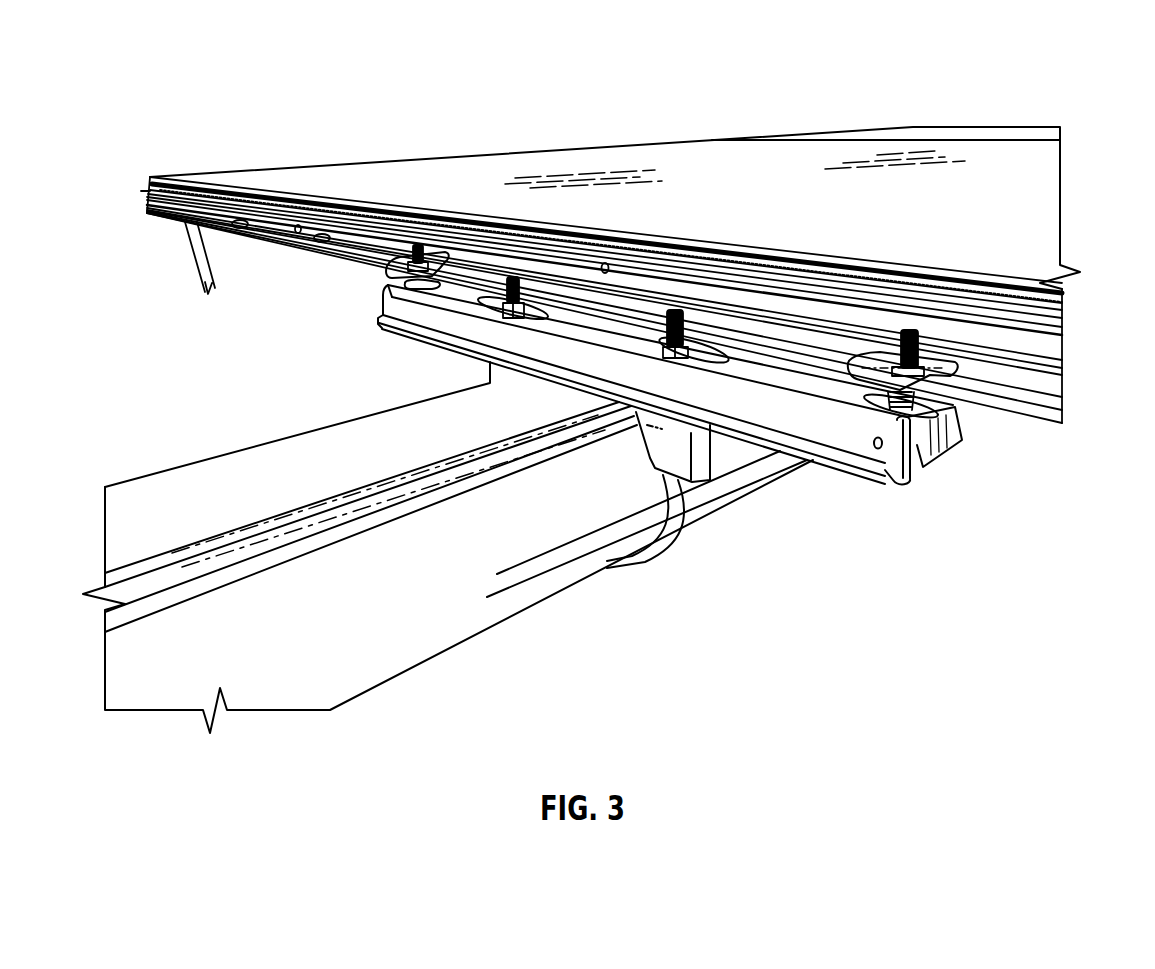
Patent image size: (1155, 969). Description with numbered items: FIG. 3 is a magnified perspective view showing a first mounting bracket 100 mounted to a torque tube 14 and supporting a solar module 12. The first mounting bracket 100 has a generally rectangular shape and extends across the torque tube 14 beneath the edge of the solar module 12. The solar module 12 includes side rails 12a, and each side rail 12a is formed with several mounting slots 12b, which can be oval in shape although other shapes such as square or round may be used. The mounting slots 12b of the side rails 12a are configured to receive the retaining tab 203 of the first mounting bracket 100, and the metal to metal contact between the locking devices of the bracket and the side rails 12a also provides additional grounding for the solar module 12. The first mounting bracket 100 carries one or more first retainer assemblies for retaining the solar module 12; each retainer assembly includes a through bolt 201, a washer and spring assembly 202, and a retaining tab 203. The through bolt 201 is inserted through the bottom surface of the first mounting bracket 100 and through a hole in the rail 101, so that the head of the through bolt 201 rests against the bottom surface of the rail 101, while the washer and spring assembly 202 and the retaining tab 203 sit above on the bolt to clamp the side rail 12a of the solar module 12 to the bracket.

The solar module 12 is at (975, 160).
The side rail 12a is at (1050, 355).
The mounting slot 12b is at (298, 238).
The support beam 14 is at (405, 652).
The first mounting bracket 100 is at (368, 325).
The rail 101 is at (928, 452).
The through bolt 201 is at (907, 315).
The washer and spring assembly 202 is at (968, 415).
The retaining tab 203 is at (437, 250).